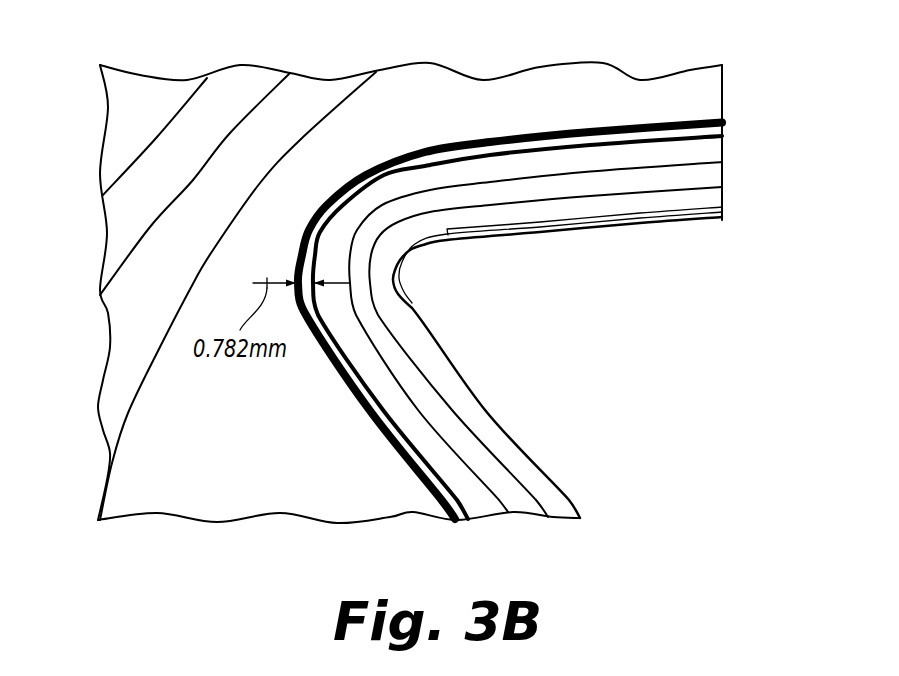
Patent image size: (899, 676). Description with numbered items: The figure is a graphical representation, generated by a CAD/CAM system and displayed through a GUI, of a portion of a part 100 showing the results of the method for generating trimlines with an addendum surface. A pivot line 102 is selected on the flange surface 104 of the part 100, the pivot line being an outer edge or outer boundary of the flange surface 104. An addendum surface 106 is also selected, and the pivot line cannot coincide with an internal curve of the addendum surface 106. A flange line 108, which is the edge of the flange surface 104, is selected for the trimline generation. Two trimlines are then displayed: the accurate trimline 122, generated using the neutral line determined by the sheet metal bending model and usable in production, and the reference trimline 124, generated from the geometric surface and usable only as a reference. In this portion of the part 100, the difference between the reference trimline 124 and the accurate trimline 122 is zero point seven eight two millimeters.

The part 100 is at (551, 273).
The trimline 122 is at (697, 118).
The trimline 124 is at (722, 131).
The pivot line 102 is at (707, 198).
The flange surface 104 is at (660, 225).
The flange line 108 is at (547, 239).
The addendum surface 106 is at (282, 492).